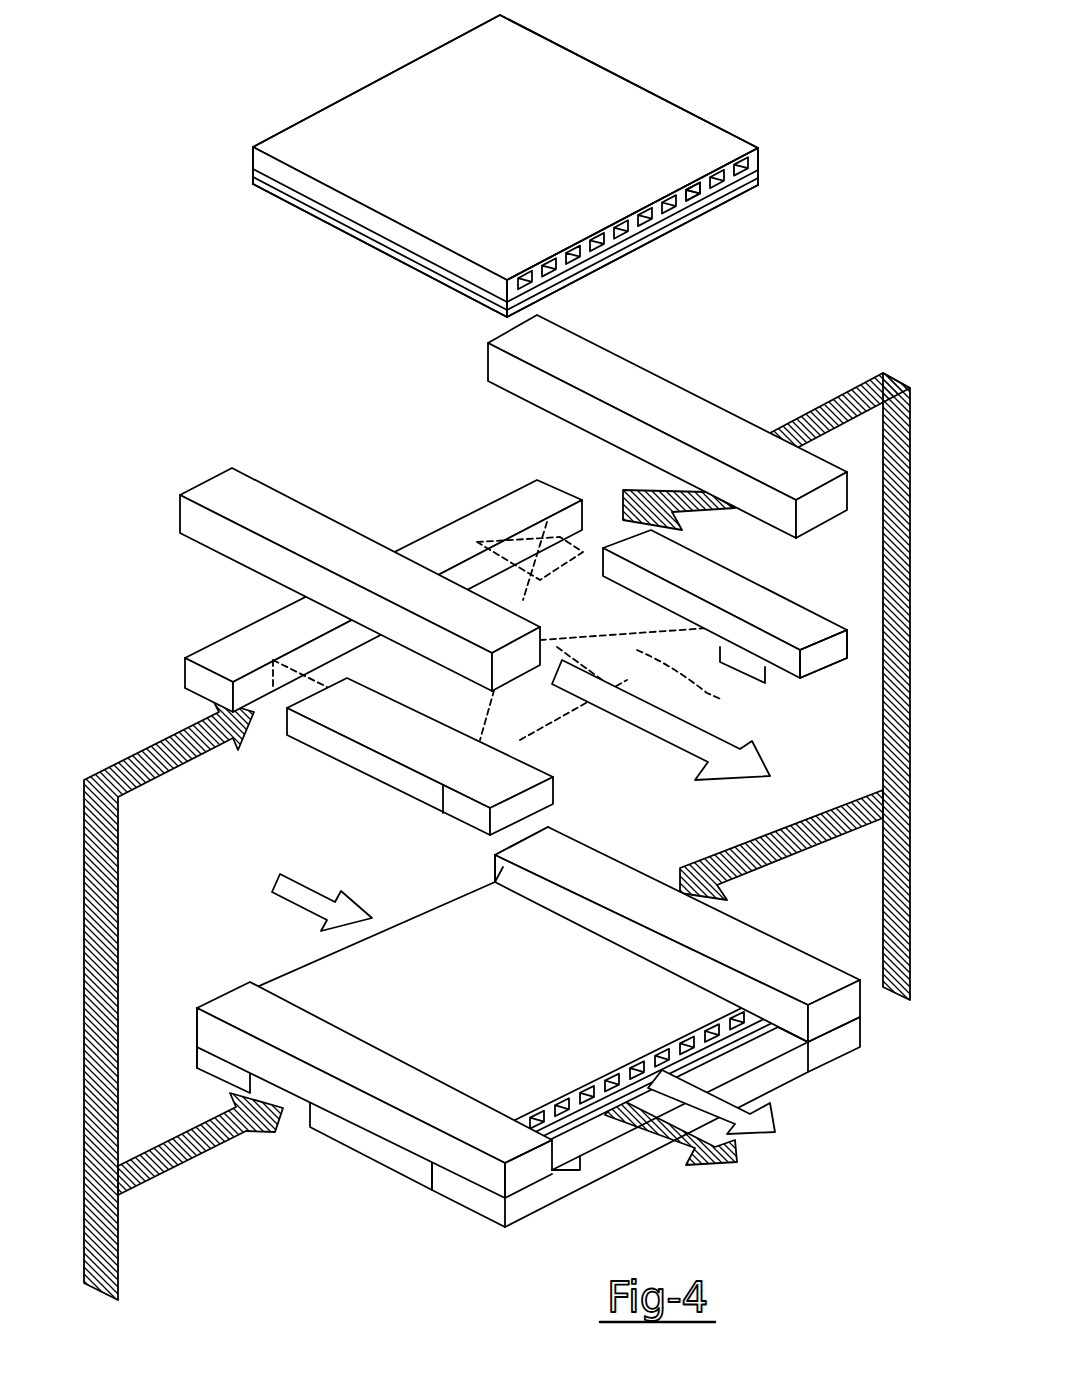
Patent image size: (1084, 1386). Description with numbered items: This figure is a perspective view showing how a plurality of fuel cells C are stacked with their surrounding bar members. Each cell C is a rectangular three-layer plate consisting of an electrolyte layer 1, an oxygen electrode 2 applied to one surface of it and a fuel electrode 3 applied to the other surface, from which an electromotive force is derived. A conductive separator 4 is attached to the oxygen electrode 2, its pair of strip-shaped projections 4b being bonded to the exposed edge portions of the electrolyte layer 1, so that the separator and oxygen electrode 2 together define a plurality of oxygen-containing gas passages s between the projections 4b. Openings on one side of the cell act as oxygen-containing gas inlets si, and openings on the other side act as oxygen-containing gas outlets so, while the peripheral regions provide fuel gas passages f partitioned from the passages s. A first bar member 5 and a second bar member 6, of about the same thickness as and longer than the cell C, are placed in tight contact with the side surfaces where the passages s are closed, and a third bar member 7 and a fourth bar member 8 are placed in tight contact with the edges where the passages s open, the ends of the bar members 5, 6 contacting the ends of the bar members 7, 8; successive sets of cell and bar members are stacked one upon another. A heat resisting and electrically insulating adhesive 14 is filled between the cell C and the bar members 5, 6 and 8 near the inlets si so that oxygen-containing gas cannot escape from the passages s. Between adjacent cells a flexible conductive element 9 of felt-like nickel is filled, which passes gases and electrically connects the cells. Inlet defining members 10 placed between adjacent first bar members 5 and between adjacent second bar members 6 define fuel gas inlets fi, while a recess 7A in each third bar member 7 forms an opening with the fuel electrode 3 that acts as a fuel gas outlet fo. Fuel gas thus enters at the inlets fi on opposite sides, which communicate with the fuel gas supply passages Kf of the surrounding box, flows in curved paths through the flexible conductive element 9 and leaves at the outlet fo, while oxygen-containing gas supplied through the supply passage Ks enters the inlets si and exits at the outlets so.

The electrolyte layer 1 is at (735, 198).
The oxygen electrode 2 is at (745, 190).
The fuel electrode 3 is at (727, 205).
The conductive separator 4 is at (690, 48).
The strip-shaped projections 4b is at (757, 162).
The first bar member 5 is at (223, 482).
The second bar member 6 is at (510, 377).
The third bar member 7 is at (812, 628).
The recess 7A is at (587, 718).
The fourth bar member 8 is at (253, 637).
The flexible conductive element 9 is at (730, 704).
The inlet defining members 10 is at (717, 577).
The heat resisting and electrically insulating adhesive 14 is at (495, 870).
The fuel cell C is at (640, 118).
The oxygen-containing gas inlets si is at (348, 98).
The oxygen-containing gas outlets so is at (603, 248).
The oxygen-containing gas passages s is at (687, 192).
The fuel gas supply passages Kf is at (127, 771).
The oxygen-containing gas supply passage Ks is at (265, 886).
The fuel gas inlets fi is at (603, 532).
The fuel gas outlets fo is at (637, 768).
The fuel gas passages f is at (452, 712).